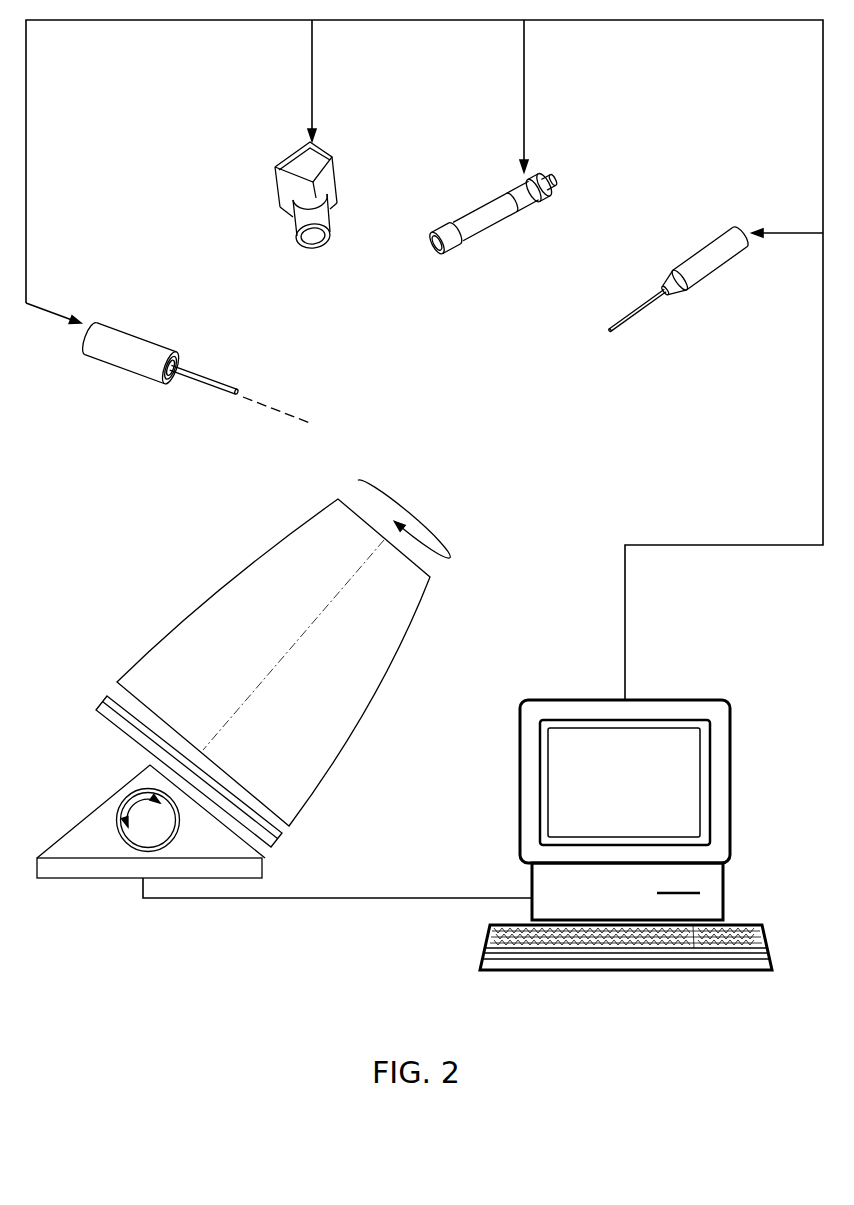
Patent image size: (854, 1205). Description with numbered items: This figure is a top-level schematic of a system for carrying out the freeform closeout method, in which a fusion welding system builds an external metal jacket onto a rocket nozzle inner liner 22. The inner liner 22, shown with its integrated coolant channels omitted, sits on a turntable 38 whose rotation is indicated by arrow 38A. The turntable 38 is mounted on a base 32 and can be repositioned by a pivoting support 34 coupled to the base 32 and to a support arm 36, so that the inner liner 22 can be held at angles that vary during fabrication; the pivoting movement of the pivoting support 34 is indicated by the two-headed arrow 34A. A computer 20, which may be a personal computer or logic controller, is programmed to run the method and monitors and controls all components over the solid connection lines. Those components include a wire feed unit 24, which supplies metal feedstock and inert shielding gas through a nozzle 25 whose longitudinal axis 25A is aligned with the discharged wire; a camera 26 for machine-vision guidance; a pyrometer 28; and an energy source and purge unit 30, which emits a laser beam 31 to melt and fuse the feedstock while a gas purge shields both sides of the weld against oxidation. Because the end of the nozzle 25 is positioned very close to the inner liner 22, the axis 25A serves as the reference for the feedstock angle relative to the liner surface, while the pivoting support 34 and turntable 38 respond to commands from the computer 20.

The computer 20 is at (733, 738).
The rocket nozzle inner liner 22 is at (165, 627).
The wire feed unit 24 is at (130, 323).
The nozzle 25 is at (188, 383).
The longitudinal axis 25A is at (287, 412).
The camera 26 is at (327, 168).
The pyrometer 28 is at (538, 202).
The energy source and purge unit 30 is at (693, 262).
The laser beam 31 is at (628, 311).
The base 32 is at (63, 857).
The pivoting support 34 is at (140, 840).
The two-headed arrow 34A is at (130, 813).
The support arm 36 is at (150, 765).
The turntable 38 is at (98, 710).
The turntable rotation arrow 38A is at (432, 530).